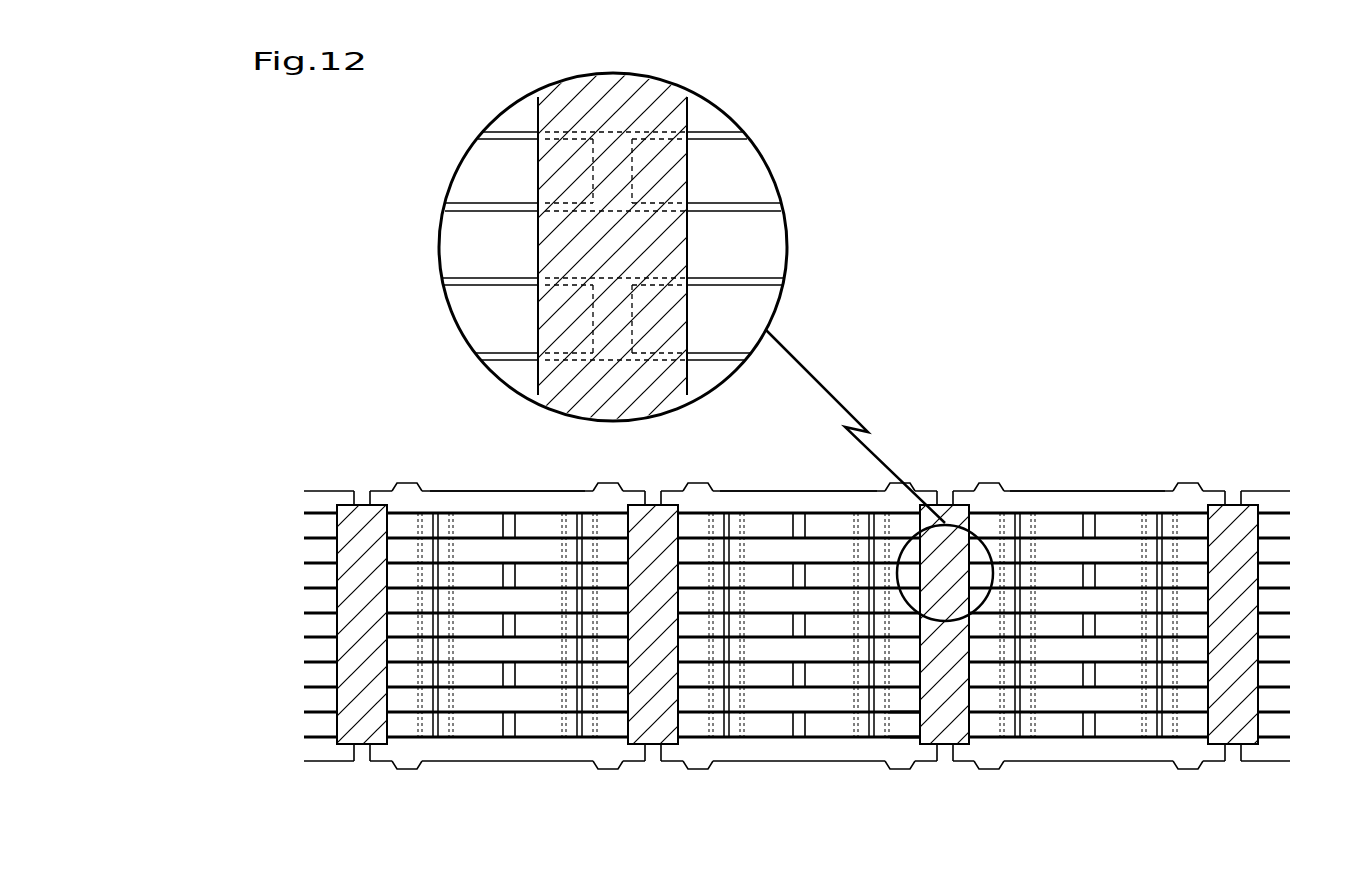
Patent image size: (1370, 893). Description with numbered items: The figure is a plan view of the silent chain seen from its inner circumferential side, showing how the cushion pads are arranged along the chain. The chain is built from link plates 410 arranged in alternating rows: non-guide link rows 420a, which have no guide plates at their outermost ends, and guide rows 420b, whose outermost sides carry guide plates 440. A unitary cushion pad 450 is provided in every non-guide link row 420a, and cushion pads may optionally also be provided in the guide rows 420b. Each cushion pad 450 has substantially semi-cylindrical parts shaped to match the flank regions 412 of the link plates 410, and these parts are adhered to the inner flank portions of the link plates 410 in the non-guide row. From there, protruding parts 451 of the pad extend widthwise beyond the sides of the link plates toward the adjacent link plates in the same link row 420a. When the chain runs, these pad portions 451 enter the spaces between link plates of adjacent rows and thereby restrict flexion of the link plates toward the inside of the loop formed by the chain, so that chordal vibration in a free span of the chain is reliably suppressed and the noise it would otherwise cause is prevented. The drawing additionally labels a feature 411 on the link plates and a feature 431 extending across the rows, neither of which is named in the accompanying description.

The link plate 410 is at (488, 178).
The electrode lead portion lines 411 is at (547, 722).
The flank region 412 is at (912, 718).
The non-guide link row 420a is at (362, 497).
The guide row 420b is at (503, 486).
The protrusion 431 is at (403, 770).
The guide plate 440 is at (452, 500).
The cushion pad 450 is at (578, 95).
The protruding part of cushion pad 451 is at (680, 178).